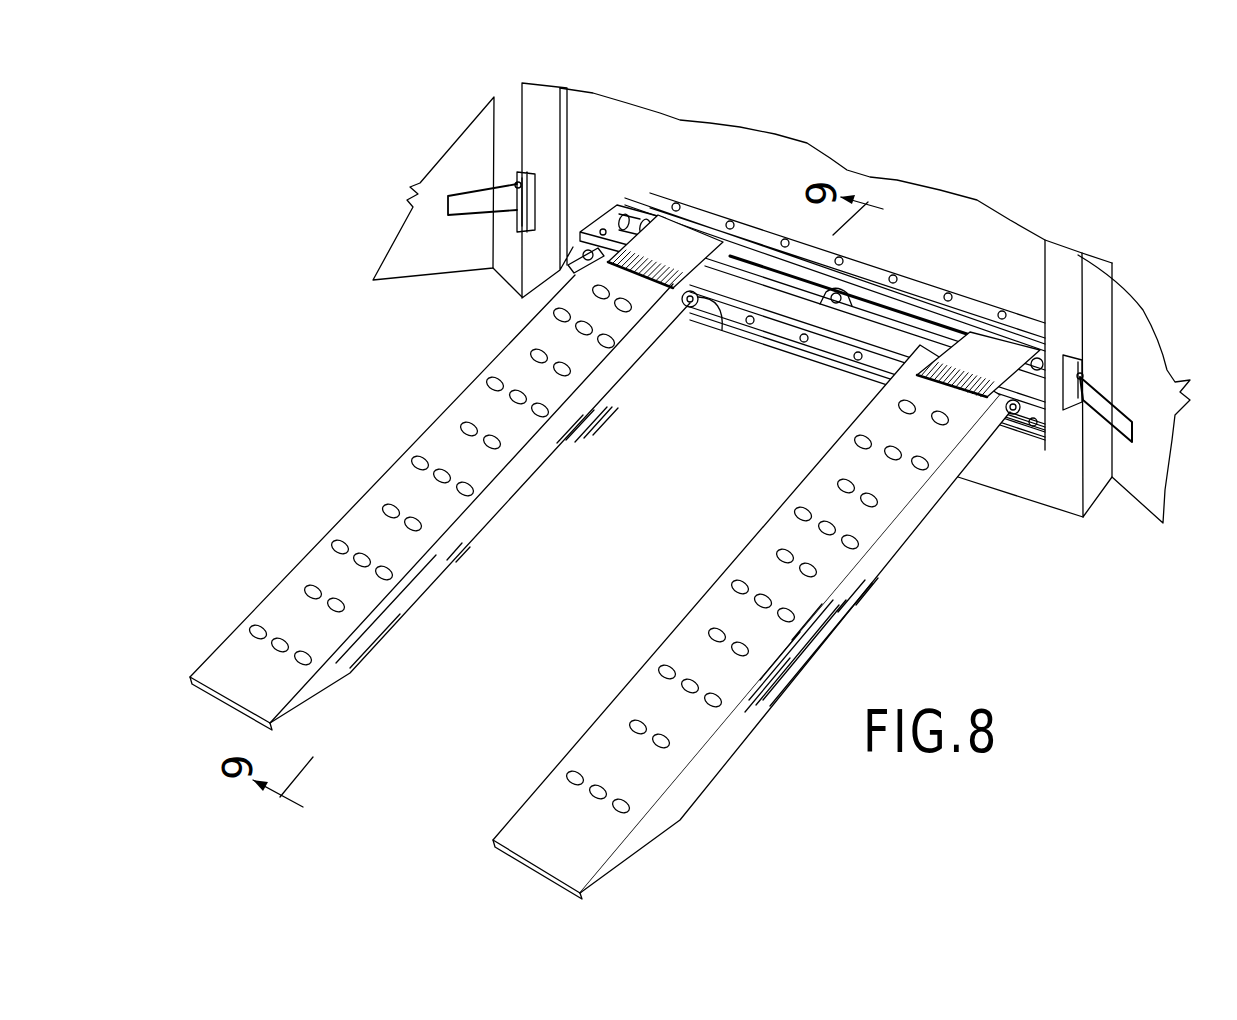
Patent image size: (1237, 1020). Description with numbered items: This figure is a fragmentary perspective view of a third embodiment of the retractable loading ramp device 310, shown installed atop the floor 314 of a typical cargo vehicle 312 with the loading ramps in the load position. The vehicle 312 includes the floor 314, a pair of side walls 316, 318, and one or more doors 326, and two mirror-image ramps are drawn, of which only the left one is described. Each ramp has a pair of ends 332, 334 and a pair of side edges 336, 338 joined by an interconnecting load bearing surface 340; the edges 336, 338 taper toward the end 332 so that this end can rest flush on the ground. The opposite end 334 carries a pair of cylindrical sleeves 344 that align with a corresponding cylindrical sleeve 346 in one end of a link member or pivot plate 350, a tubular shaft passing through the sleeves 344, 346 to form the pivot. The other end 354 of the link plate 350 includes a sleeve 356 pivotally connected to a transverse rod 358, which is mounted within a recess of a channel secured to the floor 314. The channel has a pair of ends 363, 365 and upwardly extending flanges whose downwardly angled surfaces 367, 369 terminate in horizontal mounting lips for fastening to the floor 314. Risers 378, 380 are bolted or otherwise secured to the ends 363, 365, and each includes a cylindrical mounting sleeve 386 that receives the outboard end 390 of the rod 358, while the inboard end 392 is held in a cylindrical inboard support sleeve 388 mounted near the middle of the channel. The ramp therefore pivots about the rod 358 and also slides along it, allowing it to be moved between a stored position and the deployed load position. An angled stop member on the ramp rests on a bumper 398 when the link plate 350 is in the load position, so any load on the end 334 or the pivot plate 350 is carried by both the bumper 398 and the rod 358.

The retractable loading ramp device 310 is at (362, 683).
The cargo vehicle 312 is at (1093, 277).
The floor 314 is at (962, 250).
The side wall 316 is at (573, 108).
The side wall 318 is at (1097, 493).
The door 326 is at (477, 259).
The end 332 is at (250, 688).
The end 334 is at (550, 300).
The side edge 336 is at (435, 565).
The side edge 338 is at (340, 527).
The load bearing surface 340 is at (456, 512).
The cylindrical sleeve 344 is at (557, 263).
The cylindrical sleeve 346 is at (733, 287).
The link member or pivot plate 350 is at (660, 228).
The end 354 is at (712, 258).
The sleeve 356 is at (720, 253).
The transverse rod 358 is at (767, 310).
The end 363 is at (637, 207).
The end 365 is at (1033, 303).
The downwardly angled surface 367 is at (893, 377).
The downwardly angled surface 369 is at (927, 303).
The riser 378 is at (600, 227).
The riser 380 is at (1048, 355).
The cylindrical mounting sleeve 386 is at (623, 207).
The inboard support sleeve 388 is at (858, 318).
The outboard end 390 is at (675, 255).
The inboard end 392 is at (837, 293).
The bumper 398 is at (767, 270).